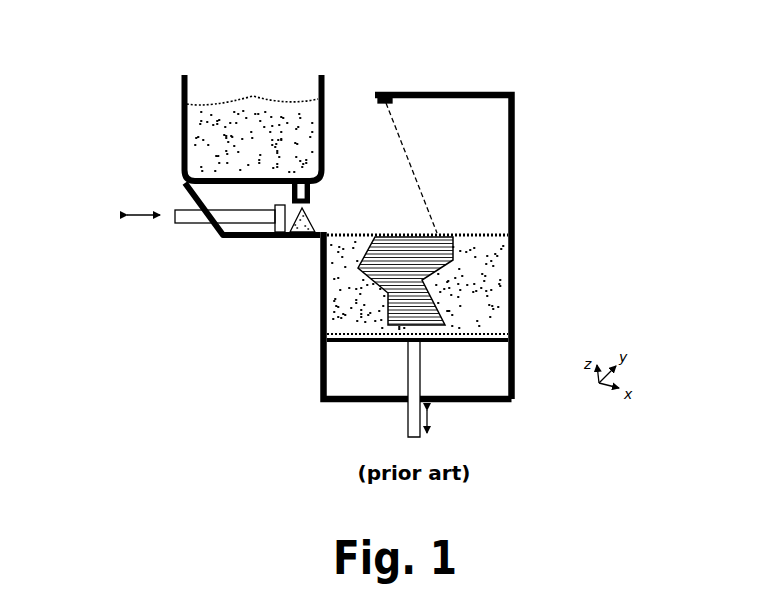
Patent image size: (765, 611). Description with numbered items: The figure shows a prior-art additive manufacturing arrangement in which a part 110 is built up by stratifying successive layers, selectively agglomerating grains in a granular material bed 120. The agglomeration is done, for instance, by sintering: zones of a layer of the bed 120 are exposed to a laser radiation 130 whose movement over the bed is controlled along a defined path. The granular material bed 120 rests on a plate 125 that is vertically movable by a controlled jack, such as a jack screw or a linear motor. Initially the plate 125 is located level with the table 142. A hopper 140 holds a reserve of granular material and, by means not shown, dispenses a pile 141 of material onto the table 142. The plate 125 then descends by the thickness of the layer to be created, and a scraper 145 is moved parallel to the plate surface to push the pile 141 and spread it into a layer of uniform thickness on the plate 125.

The part 110 is at (372, 277).
The granular material bed 120 is at (483, 272).
The plate 125 is at (465, 343).
The laser radiation 130 is at (425, 198).
The hopper 140 is at (182, 112).
The pile 141 is at (310, 226).
The table 142 is at (312, 229).
The scraper 145 is at (243, 222).